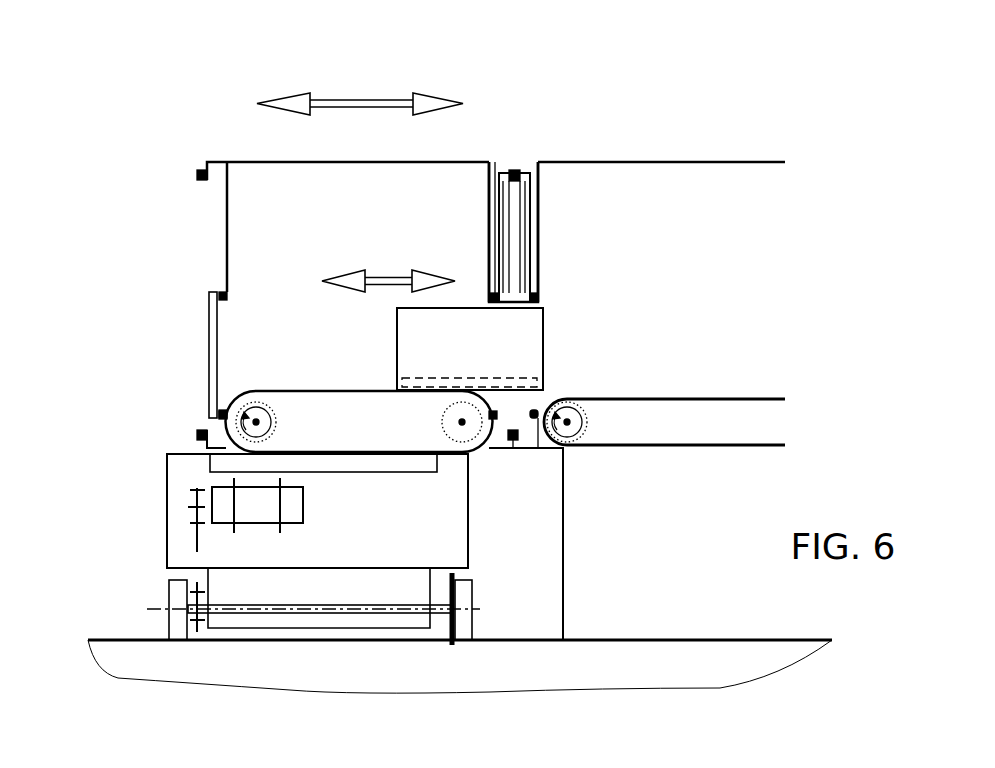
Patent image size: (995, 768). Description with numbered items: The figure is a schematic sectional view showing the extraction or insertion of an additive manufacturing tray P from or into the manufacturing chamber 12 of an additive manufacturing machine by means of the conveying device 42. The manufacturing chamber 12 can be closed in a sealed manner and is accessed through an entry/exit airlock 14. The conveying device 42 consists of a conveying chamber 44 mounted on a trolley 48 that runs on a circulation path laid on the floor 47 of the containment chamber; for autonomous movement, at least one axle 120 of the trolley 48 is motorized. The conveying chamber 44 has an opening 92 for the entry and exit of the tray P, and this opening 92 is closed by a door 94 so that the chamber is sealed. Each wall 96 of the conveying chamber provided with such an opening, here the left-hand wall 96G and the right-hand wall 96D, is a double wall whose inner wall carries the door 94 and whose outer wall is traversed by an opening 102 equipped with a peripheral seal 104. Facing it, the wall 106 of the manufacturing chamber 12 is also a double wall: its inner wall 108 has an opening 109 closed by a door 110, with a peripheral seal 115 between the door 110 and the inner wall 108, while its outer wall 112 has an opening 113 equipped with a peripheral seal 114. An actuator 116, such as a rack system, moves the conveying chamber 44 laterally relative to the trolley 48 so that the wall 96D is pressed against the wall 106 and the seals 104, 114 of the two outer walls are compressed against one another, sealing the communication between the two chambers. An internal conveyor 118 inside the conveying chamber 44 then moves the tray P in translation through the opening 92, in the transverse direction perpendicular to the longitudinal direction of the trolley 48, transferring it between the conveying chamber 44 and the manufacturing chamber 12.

The manufacturing chamber 12 is at (755, 318).
The entry/exit airlock 14 is at (533, 132).
The conveying device 42 is at (92, 458).
The conveying chamber 44 is at (222, 143).
The floor 47 is at (658, 677).
The trolley 48 is at (150, 528).
The opening 92 is at (197, 293).
The door 94 is at (213, 345).
The wall 96 is at (471, 243).
The wall 96G is at (246, 204).
The wall 96D is at (417, 232).
The opening 102 is at (290, 287).
The peripheral seal 104 is at (517, 477).
The peripheral seal 114 is at (513, 442).
The wall 106 is at (557, 222).
The inner wall 108 is at (541, 262).
The opening 109 is at (486, 349).
The door 110 is at (525, 207).
The outer wall 112 is at (523, 172).
The opening 113 is at (515, 203).
The peripheral seal 115 is at (540, 296).
The actuator 116 is at (358, 465).
The internal conveyor 118 is at (375, 435).
The axle 120 is at (293, 613).
The tray P is at (420, 378).